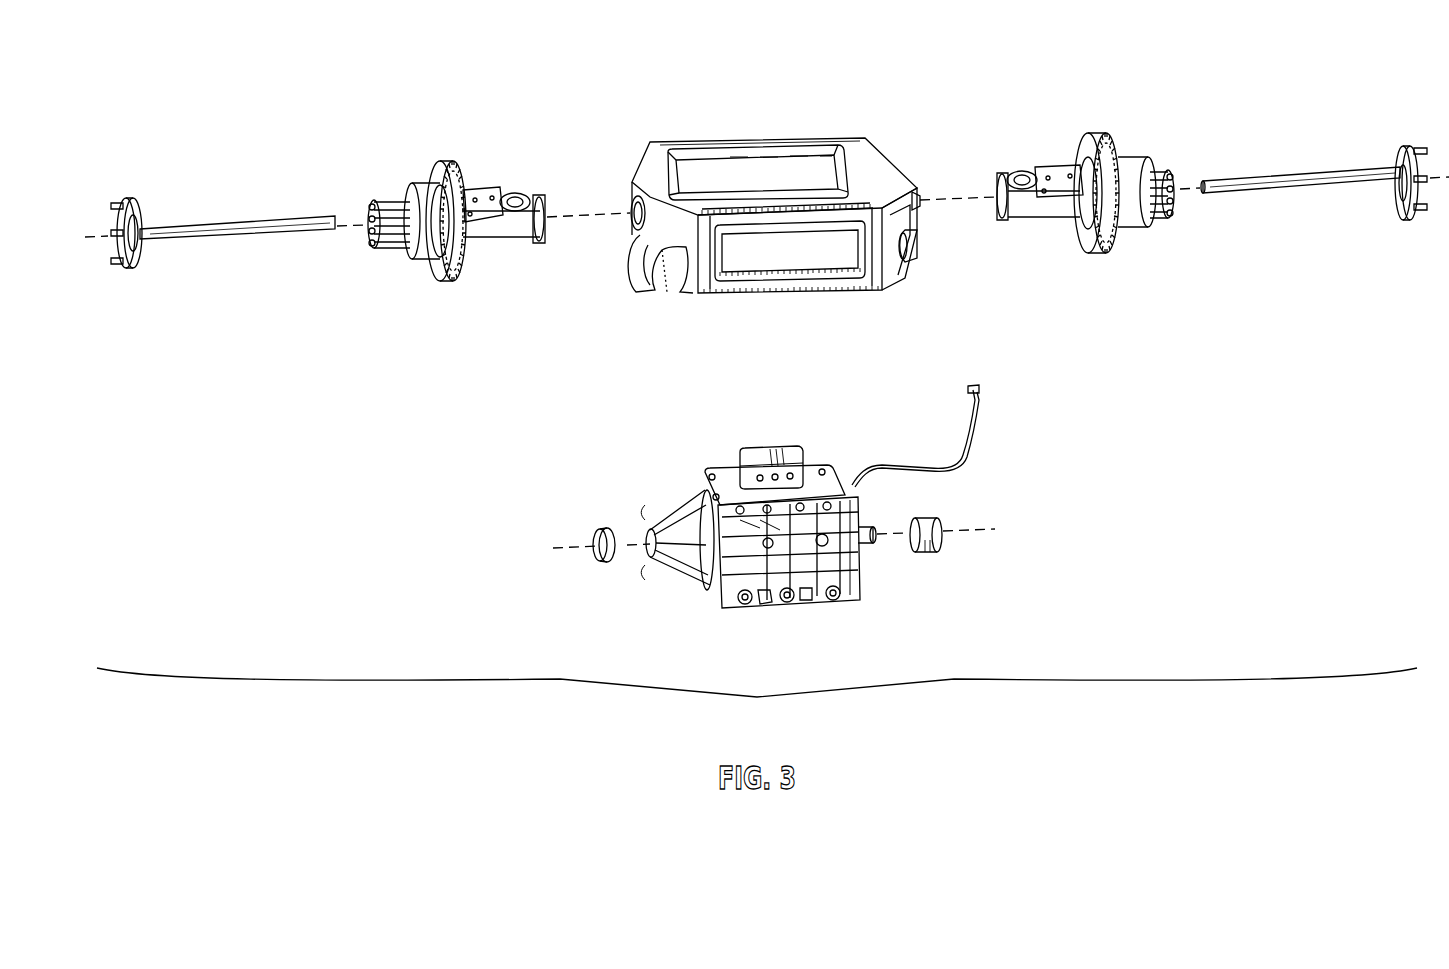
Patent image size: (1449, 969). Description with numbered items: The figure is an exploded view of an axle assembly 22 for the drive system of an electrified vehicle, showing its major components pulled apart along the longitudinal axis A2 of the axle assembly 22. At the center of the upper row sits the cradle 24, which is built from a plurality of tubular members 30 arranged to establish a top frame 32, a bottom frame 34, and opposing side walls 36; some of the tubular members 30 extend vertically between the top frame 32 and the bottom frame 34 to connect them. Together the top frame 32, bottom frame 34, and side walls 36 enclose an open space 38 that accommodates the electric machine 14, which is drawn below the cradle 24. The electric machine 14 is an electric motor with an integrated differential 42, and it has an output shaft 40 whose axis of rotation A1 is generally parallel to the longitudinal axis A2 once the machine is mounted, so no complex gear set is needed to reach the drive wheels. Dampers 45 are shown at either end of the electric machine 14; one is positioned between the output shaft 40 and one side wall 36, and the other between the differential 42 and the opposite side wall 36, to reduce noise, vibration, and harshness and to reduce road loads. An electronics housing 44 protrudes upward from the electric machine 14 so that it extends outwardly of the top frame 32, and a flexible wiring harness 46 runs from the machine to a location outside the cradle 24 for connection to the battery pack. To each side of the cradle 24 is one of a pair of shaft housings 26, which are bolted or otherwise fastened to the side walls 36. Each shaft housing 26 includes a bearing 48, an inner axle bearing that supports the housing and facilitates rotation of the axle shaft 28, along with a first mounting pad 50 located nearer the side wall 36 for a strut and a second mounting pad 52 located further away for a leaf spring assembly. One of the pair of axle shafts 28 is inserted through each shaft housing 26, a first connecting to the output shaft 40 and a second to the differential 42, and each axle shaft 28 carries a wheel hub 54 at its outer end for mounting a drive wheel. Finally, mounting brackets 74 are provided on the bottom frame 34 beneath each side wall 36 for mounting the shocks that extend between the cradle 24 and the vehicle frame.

The electric machine 14 is at (806, 531).
The axle assembly 22 is at (757, 703).
The cradle 24 is at (770, 195).
The shaft housings 26 is at (771, 169).
The axle shafts 28 is at (178, 218).
The tubular members 30 is at (740, 142).
The top frame 32 is at (774, 186).
The bottom frame 34 is at (697, 297).
The side walls 36 is at (630, 191).
The open space 38 is at (758, 172).
The output shaft 40 is at (868, 547).
The integrated differential 42 is at (680, 575).
The electronics housing 44 is at (778, 452).
The dampers 45 is at (608, 563).
The flexible wiring harness 46 is at (970, 452).
The bearing 48 is at (428, 188).
The first mounting pad 50 is at (520, 196).
The second mounting pad 52 is at (480, 193).
The wheel hub 54 is at (125, 202).
The mounting brackets 74 is at (624, 250).
The axis of rotation A1 is at (965, 538).
The longitudinal axis A2 is at (90, 238).